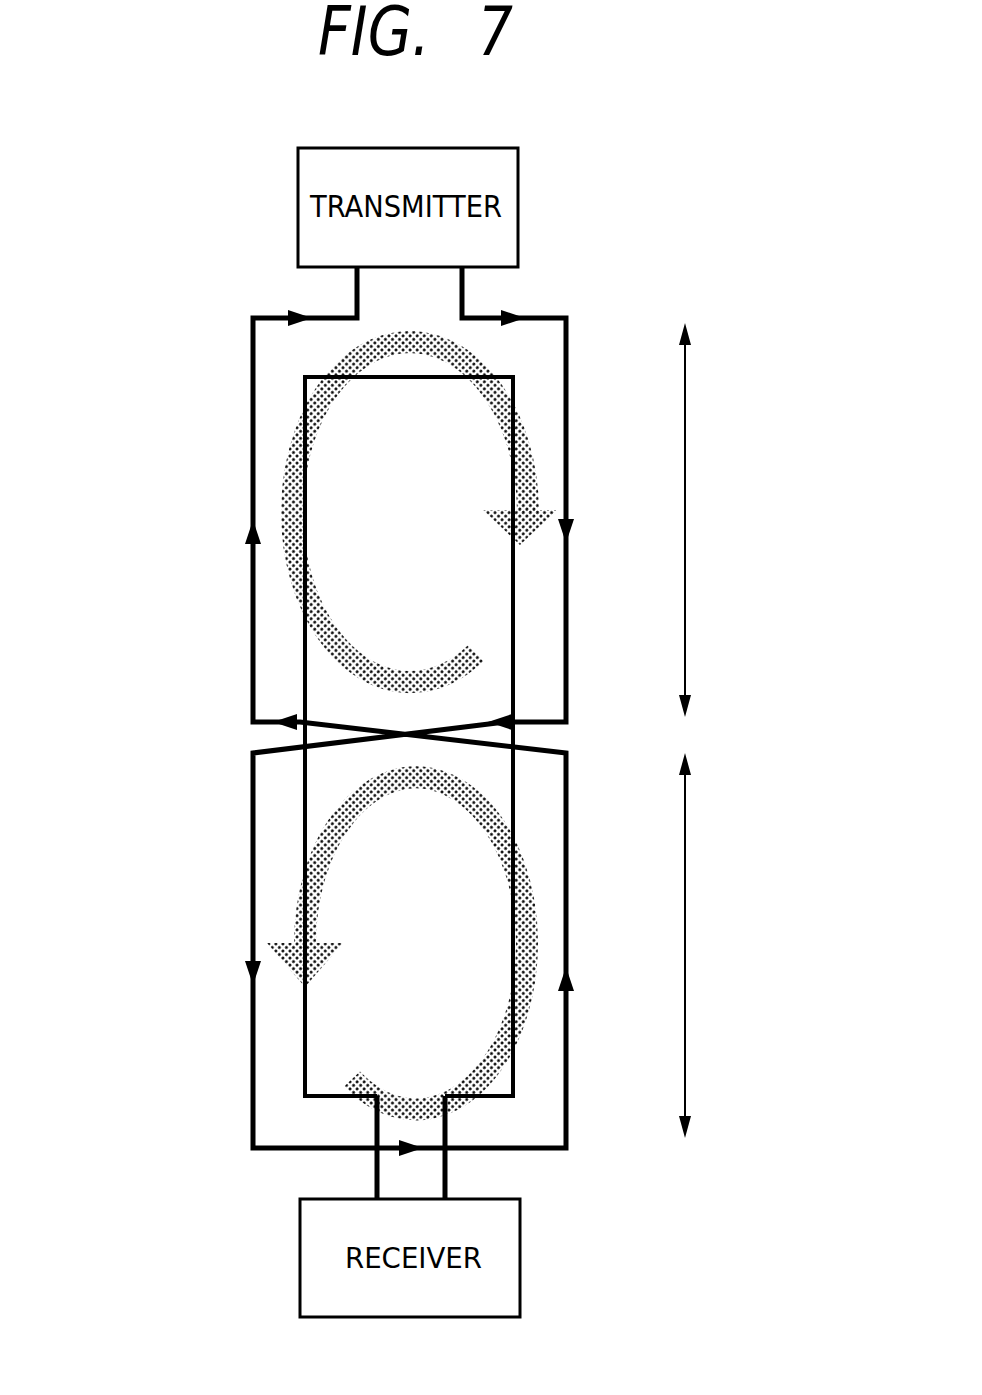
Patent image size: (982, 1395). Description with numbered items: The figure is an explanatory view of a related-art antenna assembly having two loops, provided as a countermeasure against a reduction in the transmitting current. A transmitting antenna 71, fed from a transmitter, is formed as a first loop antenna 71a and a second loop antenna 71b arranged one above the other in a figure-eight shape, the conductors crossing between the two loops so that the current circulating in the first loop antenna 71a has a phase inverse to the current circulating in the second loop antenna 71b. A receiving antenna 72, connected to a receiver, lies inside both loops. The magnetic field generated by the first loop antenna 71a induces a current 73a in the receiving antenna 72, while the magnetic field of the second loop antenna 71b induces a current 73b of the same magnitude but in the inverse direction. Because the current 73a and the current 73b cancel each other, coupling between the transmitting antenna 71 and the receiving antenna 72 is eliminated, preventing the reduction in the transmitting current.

The transmitting antenna 71 is at (553, 318).
The first loop antenna 71a is at (722, 520).
The second loop antenna 71b is at (721, 945).
The receiving antenna 72 is at (305, 1030).
The current induced by the first loop antenna 73a is at (295, 478).
The current induced by the second loop antenna 73b is at (300, 907).